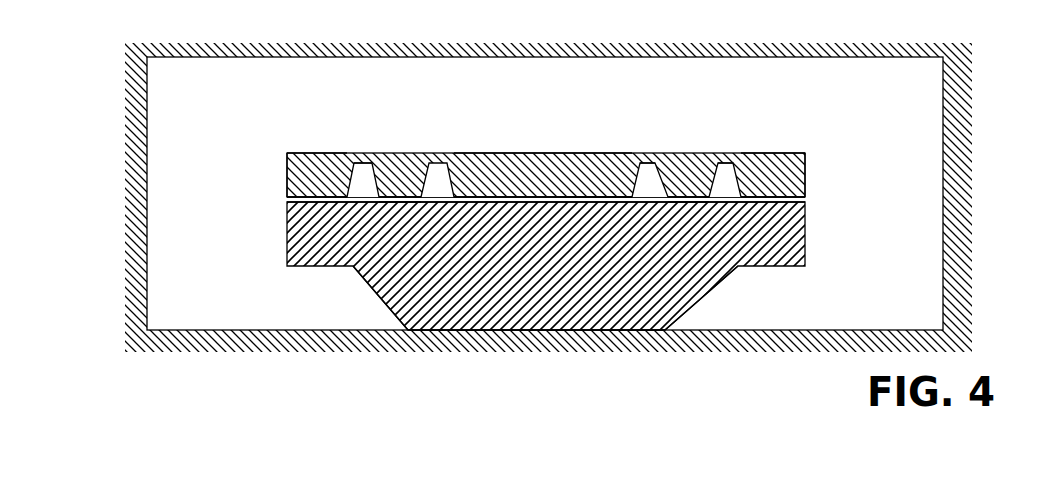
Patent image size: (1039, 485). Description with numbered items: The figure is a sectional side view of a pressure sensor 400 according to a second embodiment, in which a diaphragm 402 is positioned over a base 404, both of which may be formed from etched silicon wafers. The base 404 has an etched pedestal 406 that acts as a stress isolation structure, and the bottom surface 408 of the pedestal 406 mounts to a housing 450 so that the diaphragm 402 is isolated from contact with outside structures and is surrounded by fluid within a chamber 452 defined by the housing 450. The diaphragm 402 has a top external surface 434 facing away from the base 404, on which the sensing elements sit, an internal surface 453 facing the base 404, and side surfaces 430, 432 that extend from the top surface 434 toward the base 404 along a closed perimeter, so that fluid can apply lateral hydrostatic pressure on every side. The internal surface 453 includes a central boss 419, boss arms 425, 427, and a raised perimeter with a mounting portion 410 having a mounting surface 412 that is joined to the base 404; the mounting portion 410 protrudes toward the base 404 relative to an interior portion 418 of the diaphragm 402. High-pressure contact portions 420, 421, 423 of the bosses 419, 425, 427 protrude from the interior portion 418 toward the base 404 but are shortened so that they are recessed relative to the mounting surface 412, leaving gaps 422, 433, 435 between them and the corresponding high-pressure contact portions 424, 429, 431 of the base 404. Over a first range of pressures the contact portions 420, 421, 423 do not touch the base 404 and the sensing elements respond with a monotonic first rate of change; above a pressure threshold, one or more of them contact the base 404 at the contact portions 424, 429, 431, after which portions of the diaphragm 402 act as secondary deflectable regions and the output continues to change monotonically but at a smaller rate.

The pressure sensor 400 is at (544, 237).
The diaphragm 402 is at (287, 173).
The base 404 is at (287, 232).
The pedestal 406 is at (372, 290).
The bottom surface 408 is at (442, 341).
The mounting portion 410 is at (313, 158).
The mounting surface 412 is at (342, 193).
The interior portion 418 is at (362, 168).
The central boss 419 is at (507, 197).
The high-pressure contact portion 420 is at (538, 194).
The high-pressure contact portion 421 is at (400, 190).
The gap 422 is at (586, 197).
The high-pressure contact portion 423 is at (721, 190).
The high-pressure contact portion 424 is at (556, 200).
The boss arm 425 is at (394, 190).
The boss arm 427 is at (684, 190).
The high-pressure contact portion 429 is at (399, 201).
The side surface 430 is at (287, 158).
The high-pressure contact portion 431 is at (692, 203).
The side surface 432 is at (806, 176).
The gap 433 is at (404, 200).
The top external surface 434 is at (660, 155).
The gap 435 is at (700, 197).
The housing 450 is at (132, 348).
The chamber 452 is at (158, 295).
The internal surface 453 is at (723, 176).